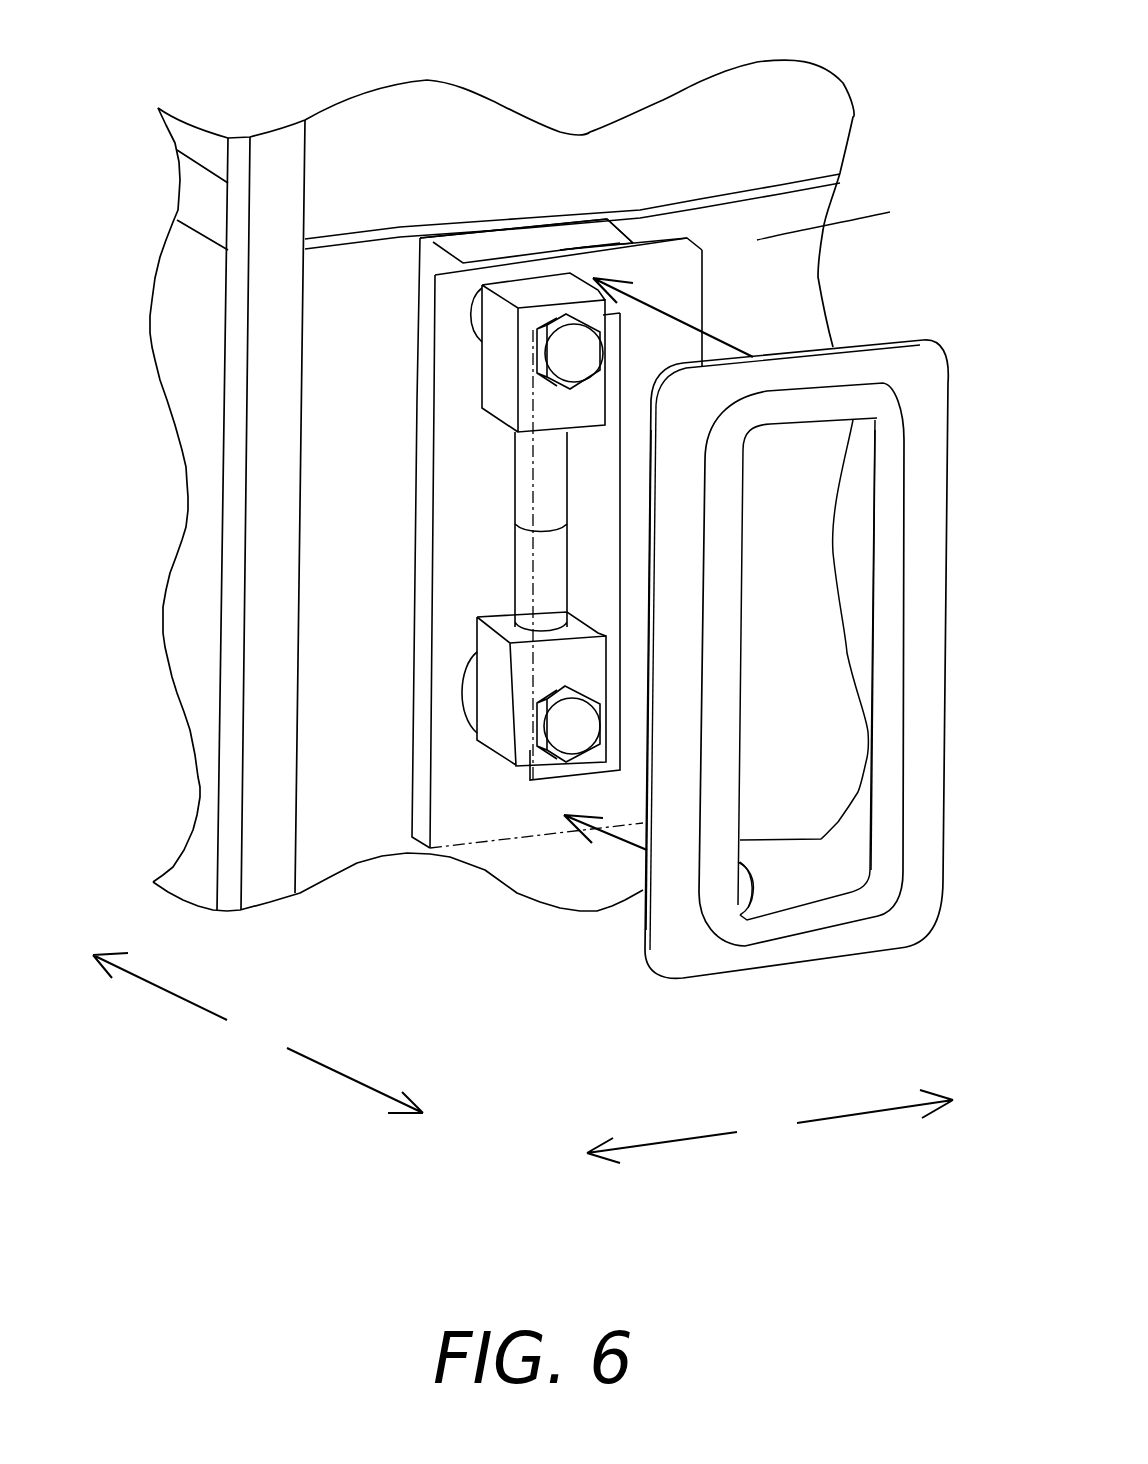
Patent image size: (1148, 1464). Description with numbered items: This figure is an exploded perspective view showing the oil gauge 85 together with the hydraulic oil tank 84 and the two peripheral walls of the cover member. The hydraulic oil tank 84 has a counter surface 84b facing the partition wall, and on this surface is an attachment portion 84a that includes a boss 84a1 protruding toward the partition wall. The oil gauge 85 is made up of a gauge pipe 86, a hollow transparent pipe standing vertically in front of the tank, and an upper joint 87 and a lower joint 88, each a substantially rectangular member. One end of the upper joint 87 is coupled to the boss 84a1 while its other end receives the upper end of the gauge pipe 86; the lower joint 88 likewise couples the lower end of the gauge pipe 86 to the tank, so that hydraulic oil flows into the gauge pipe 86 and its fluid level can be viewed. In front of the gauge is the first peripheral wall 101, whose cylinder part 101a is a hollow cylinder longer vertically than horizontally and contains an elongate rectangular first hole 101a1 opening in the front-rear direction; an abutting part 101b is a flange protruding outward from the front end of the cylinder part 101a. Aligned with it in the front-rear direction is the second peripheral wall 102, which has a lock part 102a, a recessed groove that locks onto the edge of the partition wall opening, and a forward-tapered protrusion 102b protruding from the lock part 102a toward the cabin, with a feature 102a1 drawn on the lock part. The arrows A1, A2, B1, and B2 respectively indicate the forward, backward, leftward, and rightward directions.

The hydraulic oil tank 84 is at (781, 101).
The attachment portion 84a is at (459, 609).
The boss 84a1 is at (470, 318).
The counter surface 84b is at (629, 211).
The oil gauge 85 is at (505, 550).
The gauge pipe 86 is at (513, 475).
The upper joint 87 is at (492, 437).
The lower joint 88 is at (477, 653).
The first peripheral wall 101 is at (410, 270).
The cylinder part 101a is at (437, 227).
The abutting part 101b is at (565, 217).
The first hole 101a1 is at (592, 345).
The second peripheral wall 102 is at (633, 970).
The lock part 102a is at (643, 900).
The handle protrusion 102a1 is at (752, 868).
The protrusion 102b is at (890, 885).
The arrow indicating the forward direction A1 is at (350, 1083).
The arrow indicating the backward direction A2 is at (175, 997).
The arrow indicating the leftward direction B1 is at (867, 1113).
The arrow indicating the rightward direction B2 is at (680, 1140).